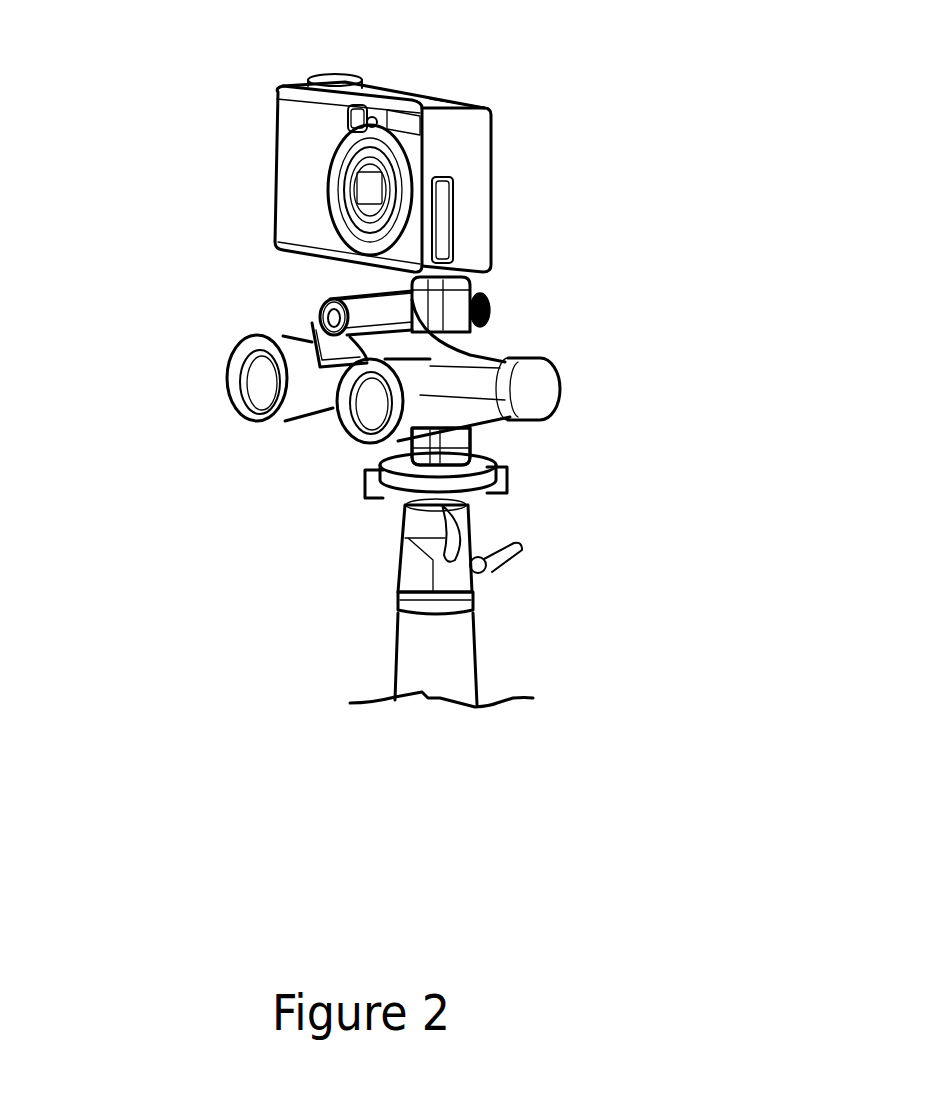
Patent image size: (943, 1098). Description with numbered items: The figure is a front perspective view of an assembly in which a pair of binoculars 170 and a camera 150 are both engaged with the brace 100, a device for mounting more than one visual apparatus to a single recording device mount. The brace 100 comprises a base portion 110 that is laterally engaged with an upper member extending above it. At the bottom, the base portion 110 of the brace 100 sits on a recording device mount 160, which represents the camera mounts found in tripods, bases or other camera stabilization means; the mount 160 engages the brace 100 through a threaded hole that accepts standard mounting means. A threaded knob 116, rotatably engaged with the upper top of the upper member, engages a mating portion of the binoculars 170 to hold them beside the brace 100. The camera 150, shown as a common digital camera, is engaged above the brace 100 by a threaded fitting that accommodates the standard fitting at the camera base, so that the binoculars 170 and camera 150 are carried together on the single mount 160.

The camera 150 is at (525, 148).
The threaded knob 116 is at (488, 302).
The brace 100 is at (528, 321).
The base portion 110 is at (455, 447).
The pair of binoculars 170 is at (198, 372).
The recording device mount 160 is at (558, 505).